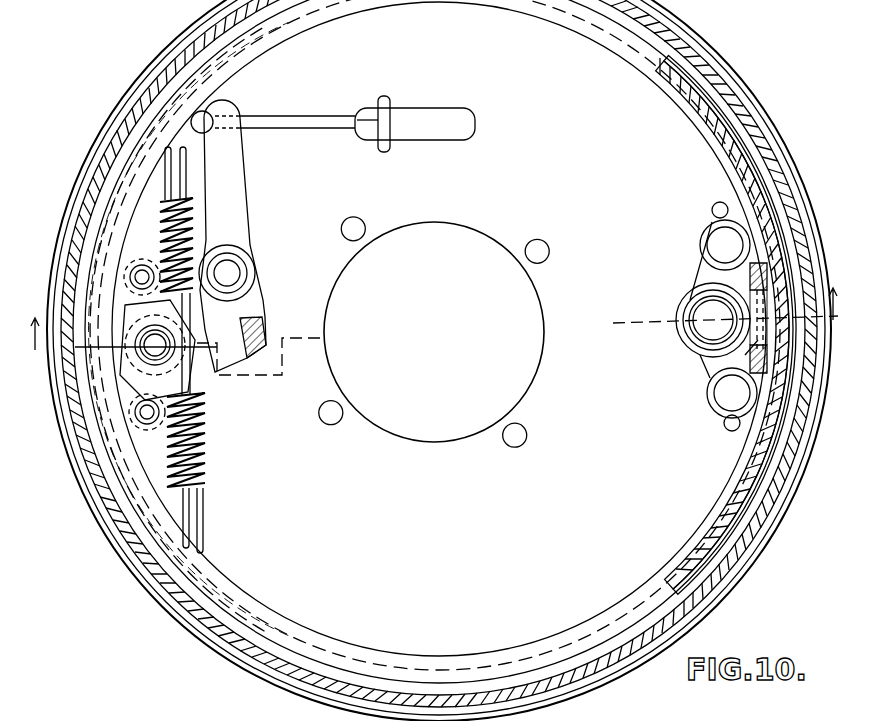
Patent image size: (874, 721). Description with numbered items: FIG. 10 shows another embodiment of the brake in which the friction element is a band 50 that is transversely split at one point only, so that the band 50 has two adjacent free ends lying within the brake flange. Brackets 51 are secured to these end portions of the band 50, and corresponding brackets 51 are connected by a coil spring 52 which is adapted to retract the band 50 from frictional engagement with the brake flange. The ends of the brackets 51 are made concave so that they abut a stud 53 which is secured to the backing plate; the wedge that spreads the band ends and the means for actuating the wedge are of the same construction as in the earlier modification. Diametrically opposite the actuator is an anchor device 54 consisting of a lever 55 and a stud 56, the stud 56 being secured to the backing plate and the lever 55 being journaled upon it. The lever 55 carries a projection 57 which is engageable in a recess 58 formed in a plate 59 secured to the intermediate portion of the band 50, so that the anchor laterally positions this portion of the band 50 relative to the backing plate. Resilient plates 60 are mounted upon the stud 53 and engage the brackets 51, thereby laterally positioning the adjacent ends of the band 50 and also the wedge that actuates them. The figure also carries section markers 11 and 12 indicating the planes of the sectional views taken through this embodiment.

The section line 11- 11 is at (437, 352).
The bolts 12 is at (158, 250).
The band 50 is at (640, 602).
The brackets 51 is at (140, 205).
The coil spring 52 is at (200, 452).
The stud 53 is at (150, 333).
The anchor device 54 is at (671, 299).
The lever 55 is at (708, 364).
The stud 56 is at (700, 333).
The projection 57 is at (770, 298).
The recess 58 is at (739, 356).
The plate 59 is at (705, 140).
The resilient plates 60 is at (168, 375).